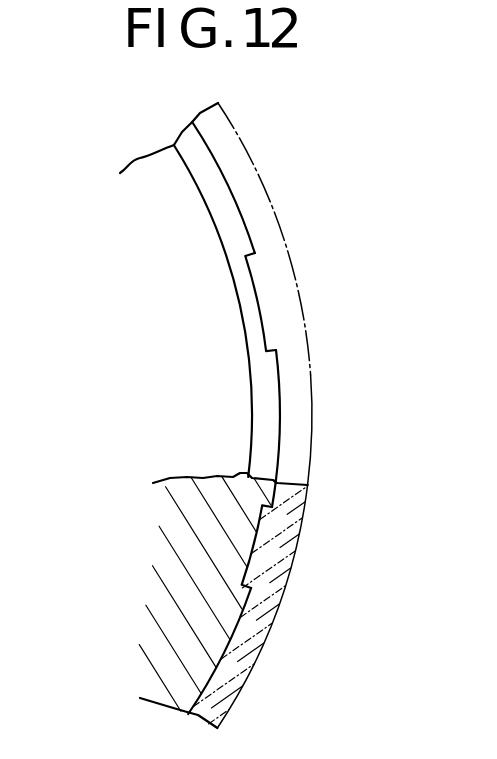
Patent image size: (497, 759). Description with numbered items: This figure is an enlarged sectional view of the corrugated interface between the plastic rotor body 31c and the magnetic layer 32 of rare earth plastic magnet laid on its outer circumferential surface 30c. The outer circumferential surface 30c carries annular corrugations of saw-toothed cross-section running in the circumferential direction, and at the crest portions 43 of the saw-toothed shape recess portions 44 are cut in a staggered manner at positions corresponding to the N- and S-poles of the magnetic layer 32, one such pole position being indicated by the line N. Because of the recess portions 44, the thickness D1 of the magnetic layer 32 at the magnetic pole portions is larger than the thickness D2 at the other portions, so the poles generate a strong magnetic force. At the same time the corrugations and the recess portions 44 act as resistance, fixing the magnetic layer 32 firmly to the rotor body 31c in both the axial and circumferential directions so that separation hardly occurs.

The outer circumferential surface 30c is at (240, 200).
The rotor body 31c is at (223, 620).
The magnetic layer 32 is at (297, 460).
The crest portions 43 is at (283, 430).
The recess portions 44 is at (265, 327).
The thickness of the magnetic layer at the magnetic poles D1 is at (210, 279).
The thickness of the magnetic layer at other portions D2 is at (258, 394).
The N-pole N is at (213, 310).